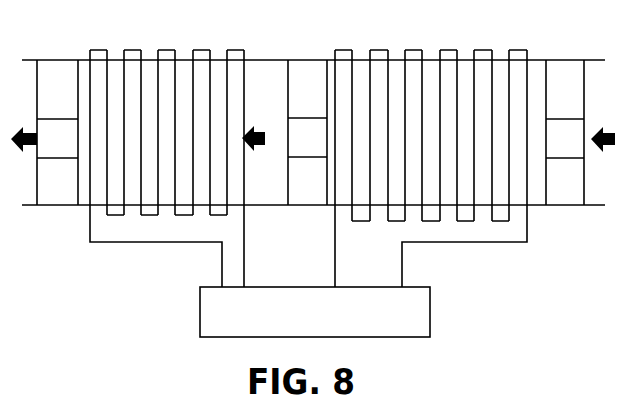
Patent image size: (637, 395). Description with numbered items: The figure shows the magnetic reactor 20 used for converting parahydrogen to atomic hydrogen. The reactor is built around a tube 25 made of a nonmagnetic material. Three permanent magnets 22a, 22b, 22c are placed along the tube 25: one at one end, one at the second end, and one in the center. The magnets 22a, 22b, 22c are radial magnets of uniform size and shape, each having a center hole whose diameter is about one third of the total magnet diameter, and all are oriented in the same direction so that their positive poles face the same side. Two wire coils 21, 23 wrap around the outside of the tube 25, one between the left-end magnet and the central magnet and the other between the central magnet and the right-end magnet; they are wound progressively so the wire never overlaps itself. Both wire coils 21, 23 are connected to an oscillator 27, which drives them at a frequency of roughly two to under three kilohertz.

The magnetic reactor 20 is at (165, 23).
The wire coil 21 is at (464, 238).
The permanent magnet 22a is at (565, 197).
The permanent magnet 22b is at (309, 75).
The permanent magnet 22c is at (57, 77).
The wire coil 23 is at (147, 233).
The tube 25 is at (587, 60).
The oscillator 27 is at (420, 320).